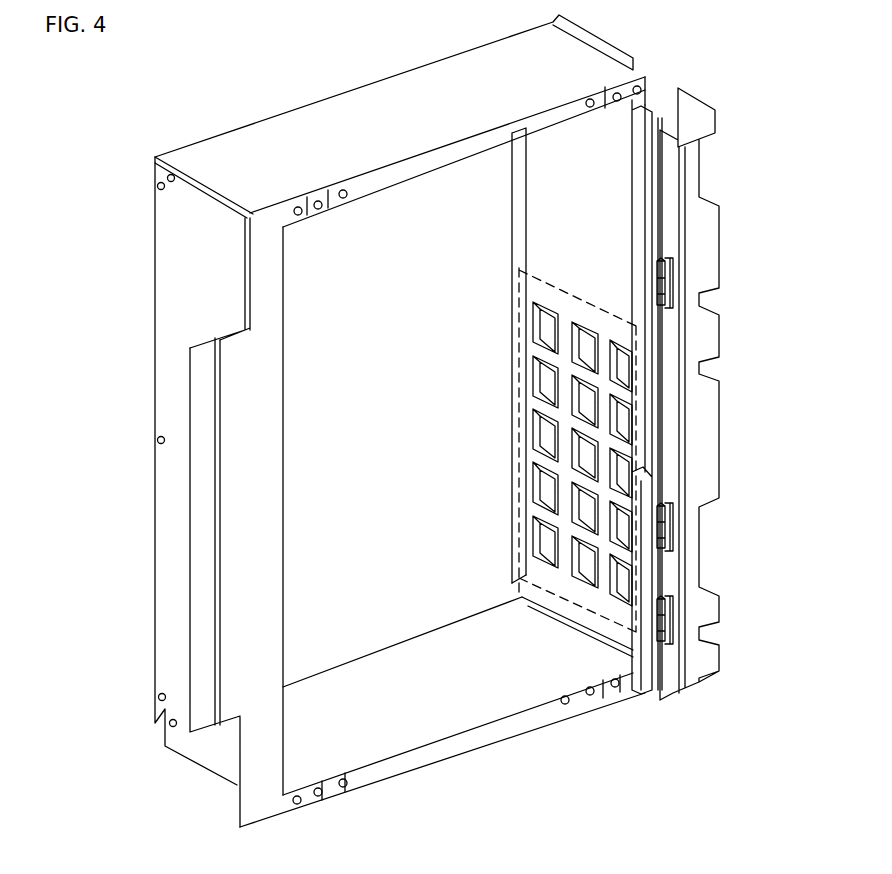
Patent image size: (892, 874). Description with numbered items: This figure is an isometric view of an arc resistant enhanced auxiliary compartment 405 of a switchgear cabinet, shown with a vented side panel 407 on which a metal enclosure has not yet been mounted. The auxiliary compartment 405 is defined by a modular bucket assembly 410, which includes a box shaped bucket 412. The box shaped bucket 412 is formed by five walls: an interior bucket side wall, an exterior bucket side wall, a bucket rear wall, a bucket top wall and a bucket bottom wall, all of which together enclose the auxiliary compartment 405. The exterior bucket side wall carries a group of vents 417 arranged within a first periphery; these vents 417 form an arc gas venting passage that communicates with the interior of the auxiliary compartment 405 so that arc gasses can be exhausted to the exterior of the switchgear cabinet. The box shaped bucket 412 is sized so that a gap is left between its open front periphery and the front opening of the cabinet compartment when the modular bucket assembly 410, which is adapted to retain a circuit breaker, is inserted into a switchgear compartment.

The arc resistant enhanced auxiliary compartment 405 is at (503, 677).
The vented side panel 407 is at (585, 190).
The modular bucket assembly 410 is at (408, 60).
The box shaped bucket 412 is at (214, 195).
The vents 417 is at (540, 428).